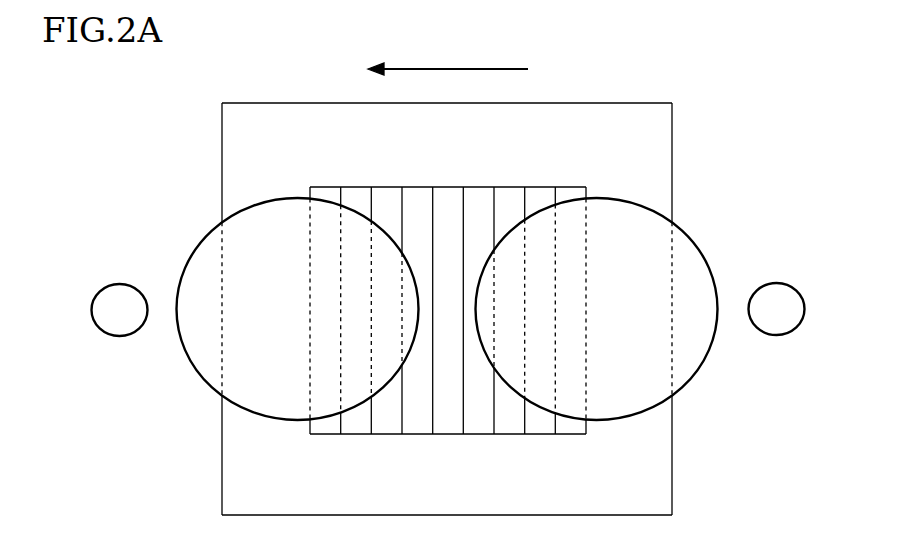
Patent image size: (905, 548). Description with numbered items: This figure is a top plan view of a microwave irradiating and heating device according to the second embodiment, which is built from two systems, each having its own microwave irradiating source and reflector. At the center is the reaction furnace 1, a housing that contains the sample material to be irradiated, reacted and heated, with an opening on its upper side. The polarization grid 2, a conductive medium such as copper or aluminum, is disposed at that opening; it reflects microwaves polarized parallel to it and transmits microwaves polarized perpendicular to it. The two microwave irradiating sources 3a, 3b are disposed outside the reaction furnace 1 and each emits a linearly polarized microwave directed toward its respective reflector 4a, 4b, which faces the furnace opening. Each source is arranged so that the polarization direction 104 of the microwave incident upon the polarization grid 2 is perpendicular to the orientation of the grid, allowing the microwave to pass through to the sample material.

The reaction furnace 1 is at (247, 489).
The polarization grid 2 is at (338, 200).
The microwave irradiating source 3a is at (786, 284).
The microwave irradiating source 3b is at (122, 285).
The reflector 4a is at (695, 246).
The reflector 4b is at (204, 240).
The polarization direction 104 is at (446, 68).